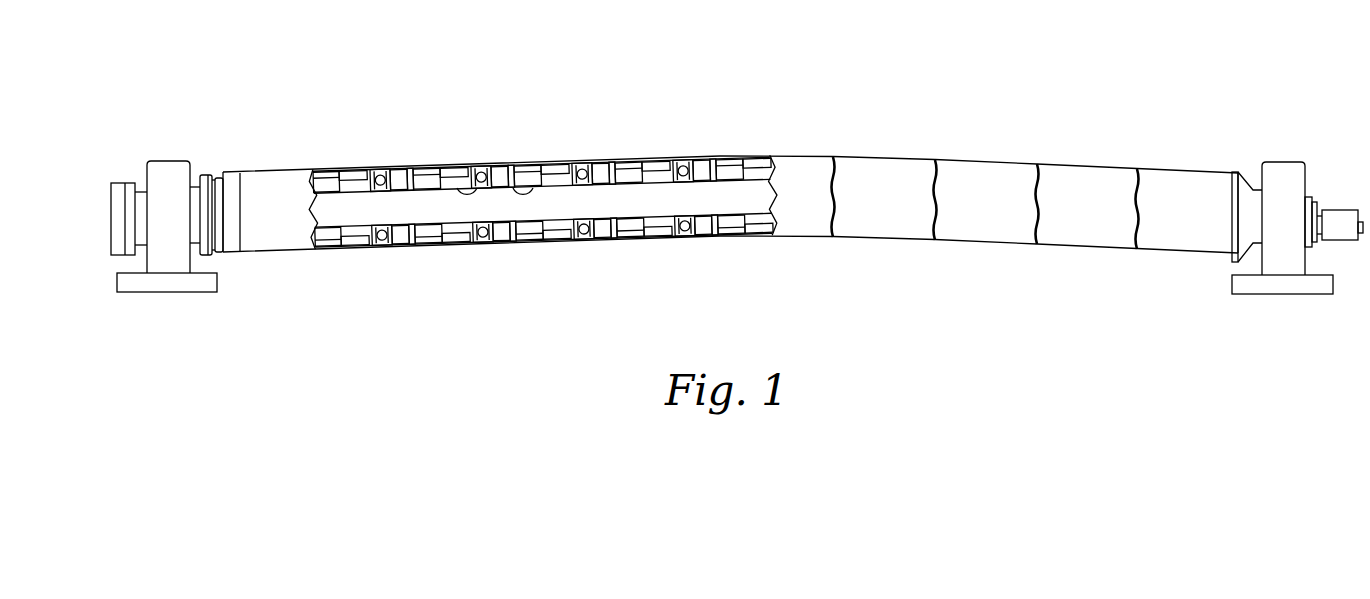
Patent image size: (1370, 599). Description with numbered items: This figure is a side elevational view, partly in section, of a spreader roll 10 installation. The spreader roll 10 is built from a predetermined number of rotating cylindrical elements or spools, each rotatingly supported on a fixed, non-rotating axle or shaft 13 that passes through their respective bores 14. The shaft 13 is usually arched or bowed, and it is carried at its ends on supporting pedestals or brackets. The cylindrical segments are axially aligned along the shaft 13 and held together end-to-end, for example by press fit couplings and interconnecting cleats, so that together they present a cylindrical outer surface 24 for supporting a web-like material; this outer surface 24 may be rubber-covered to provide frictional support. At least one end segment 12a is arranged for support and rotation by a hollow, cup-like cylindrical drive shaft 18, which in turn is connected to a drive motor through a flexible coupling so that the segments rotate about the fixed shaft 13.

The spreader roll 10 is at (662, 112).
The end segment 12a is at (1188, 203).
The fixed axle or shaft 13 is at (403, 202).
The bores 14 is at (513, 198).
The hollow cylindrical drive shaft 18 is at (1240, 172).
The cylindrical outer surface 24 is at (970, 157).